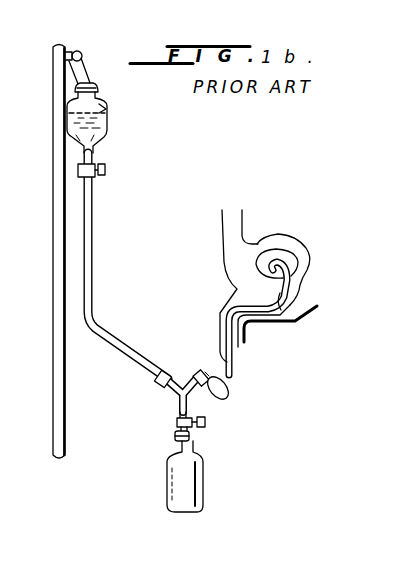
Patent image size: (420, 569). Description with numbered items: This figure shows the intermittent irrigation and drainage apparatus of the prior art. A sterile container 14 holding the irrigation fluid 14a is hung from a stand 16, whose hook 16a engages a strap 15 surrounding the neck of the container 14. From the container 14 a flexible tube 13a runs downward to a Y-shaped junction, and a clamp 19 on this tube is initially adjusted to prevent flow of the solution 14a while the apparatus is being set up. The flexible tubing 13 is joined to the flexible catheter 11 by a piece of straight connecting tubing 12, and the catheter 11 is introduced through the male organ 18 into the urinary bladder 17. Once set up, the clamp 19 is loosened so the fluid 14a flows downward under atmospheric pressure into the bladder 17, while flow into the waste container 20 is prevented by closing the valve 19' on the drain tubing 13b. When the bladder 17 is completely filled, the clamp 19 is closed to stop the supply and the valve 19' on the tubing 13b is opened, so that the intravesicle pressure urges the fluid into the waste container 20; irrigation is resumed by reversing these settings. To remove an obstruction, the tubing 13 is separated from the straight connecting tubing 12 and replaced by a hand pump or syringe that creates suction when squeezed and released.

The flexible catheter 11 is at (230, 370).
The straight connecting tubing 12 is at (209, 368).
The flexible tubing 13 is at (203, 376).
The flexible tube 13a is at (113, 338).
The tubing 13b is at (174, 432).
The sterile container 14 is at (107, 130).
The fluid 14a is at (107, 107).
The strap 15 is at (84, 70).
The stand 16 is at (52, 170).
The hook 16a is at (80, 53).
The urinary bladder 17 is at (298, 258).
The male organ 18 is at (218, 318).
The clamp 19 is at (113, 167).
The valve 19' is at (218, 421).
The waste container 20 is at (207, 488).